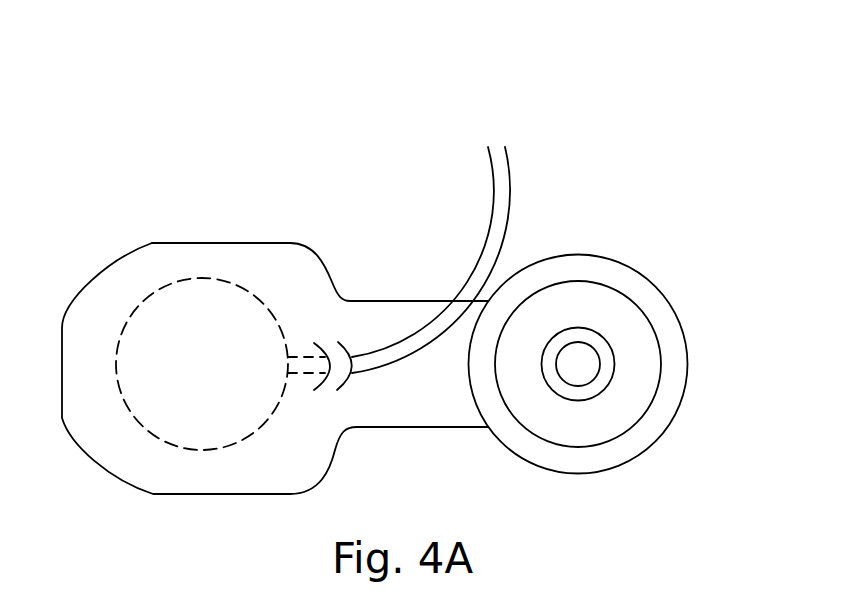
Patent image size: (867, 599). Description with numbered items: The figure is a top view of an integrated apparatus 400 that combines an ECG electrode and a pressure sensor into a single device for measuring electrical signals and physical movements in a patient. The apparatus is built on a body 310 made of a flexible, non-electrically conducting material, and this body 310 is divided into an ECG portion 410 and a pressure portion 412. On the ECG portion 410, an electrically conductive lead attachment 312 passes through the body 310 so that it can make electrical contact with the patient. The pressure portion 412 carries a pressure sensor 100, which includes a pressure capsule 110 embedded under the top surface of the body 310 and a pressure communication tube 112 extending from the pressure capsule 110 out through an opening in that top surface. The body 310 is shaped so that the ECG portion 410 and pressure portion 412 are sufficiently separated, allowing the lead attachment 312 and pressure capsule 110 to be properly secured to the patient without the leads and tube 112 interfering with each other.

The integrated apparatus 400 is at (338, 42).
The pressure sensor 100 is at (163, 262).
The pressure capsule 110 is at (148, 433).
The pressure communication tube 112 is at (507, 158).
The body 310 is at (291, 243).
The lead attachment 312 is at (598, 330).
The ECG portion 410 is at (598, 242).
The pressure portion 412 is at (198, 227).